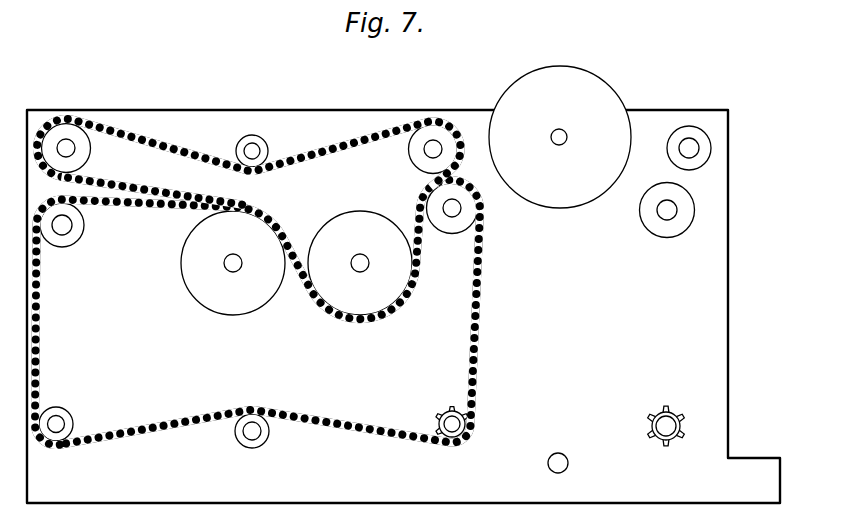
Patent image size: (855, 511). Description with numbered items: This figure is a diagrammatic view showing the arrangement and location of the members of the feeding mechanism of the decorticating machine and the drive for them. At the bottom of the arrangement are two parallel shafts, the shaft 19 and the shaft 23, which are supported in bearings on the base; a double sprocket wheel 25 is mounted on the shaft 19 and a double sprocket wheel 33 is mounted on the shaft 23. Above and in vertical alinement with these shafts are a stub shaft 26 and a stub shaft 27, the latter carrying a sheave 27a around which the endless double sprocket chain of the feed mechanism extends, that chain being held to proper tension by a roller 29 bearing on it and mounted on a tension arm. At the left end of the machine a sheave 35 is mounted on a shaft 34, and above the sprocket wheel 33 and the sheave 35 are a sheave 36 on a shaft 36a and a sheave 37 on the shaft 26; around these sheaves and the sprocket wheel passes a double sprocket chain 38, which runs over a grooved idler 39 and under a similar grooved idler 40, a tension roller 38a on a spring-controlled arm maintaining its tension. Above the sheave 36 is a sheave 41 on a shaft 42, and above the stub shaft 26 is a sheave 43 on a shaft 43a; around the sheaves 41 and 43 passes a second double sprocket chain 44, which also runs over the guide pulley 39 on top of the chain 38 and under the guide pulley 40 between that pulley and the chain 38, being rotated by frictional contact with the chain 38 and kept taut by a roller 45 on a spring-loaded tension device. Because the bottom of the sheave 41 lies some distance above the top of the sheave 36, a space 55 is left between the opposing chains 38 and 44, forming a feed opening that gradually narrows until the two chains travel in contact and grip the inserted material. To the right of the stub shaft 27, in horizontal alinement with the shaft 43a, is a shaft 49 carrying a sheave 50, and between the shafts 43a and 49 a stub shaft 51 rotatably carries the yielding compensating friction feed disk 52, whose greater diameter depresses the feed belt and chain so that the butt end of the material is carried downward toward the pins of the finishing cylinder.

The shaft 19 is at (664, 429).
The shaft 23 is at (452, 427).
The double sprocket wheel 25 is at (665, 406).
The stub shaft 26 is at (458, 212).
The stub shaft 27 is at (667, 215).
The sheave 27a is at (678, 222).
The roller 29 is at (558, 453).
The double sprocket wheel 33 is at (438, 414).
The shaft 34 is at (58, 422).
The sheave 35 is at (70, 419).
The sheave 36 is at (74, 240).
The shaft 36a is at (61, 228).
The sheave 37 is at (456, 231).
The double sprocket chain 38 is at (136, 205).
The tension roller 38a is at (243, 440).
The grooved idler 39 is at (217, 287).
The grooved idler 40 is at (340, 283).
The sheave 41 is at (91, 152).
The shaft 42 is at (66, 146).
The sheave 43 is at (414, 152).
The shaft 43a is at (433, 147).
The double sprocket chain 44 is at (271, 213).
The roller 45 is at (241, 143).
The shaft 49 is at (696, 149).
The sheave 50 is at (705, 157).
The stub shaft 51 is at (558, 143).
The compensating friction feed disk 52 is at (560, 137).
The space 55 is at (98, 189).